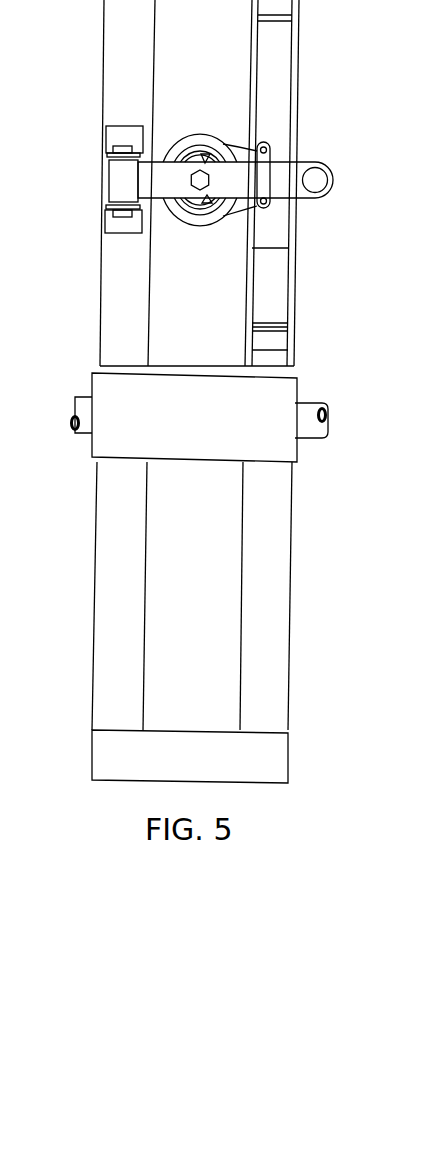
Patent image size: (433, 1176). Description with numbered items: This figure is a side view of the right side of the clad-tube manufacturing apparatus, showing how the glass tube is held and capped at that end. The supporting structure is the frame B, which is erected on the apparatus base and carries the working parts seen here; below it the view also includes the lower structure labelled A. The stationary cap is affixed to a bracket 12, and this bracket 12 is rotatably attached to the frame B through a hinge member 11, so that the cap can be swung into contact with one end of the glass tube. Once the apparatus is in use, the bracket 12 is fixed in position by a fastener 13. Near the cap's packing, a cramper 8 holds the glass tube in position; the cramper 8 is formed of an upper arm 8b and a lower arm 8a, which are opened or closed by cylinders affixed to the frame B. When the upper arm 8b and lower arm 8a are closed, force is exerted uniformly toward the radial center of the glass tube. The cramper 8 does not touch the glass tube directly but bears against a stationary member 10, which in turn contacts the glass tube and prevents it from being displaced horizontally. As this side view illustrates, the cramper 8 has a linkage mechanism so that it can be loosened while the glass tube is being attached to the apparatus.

The cylinder A is at (105, 628).
The frame B is at (107, 323).
The cramper 8 is at (200, 154).
The lower arm 8a is at (200, 206).
The upper arm 8b is at (185, 141).
The stationary member 10 is at (213, 148).
The hinge member 11 is at (116, 221).
The bracket 12 is at (295, 168).
The fastener 13 is at (264, 181).